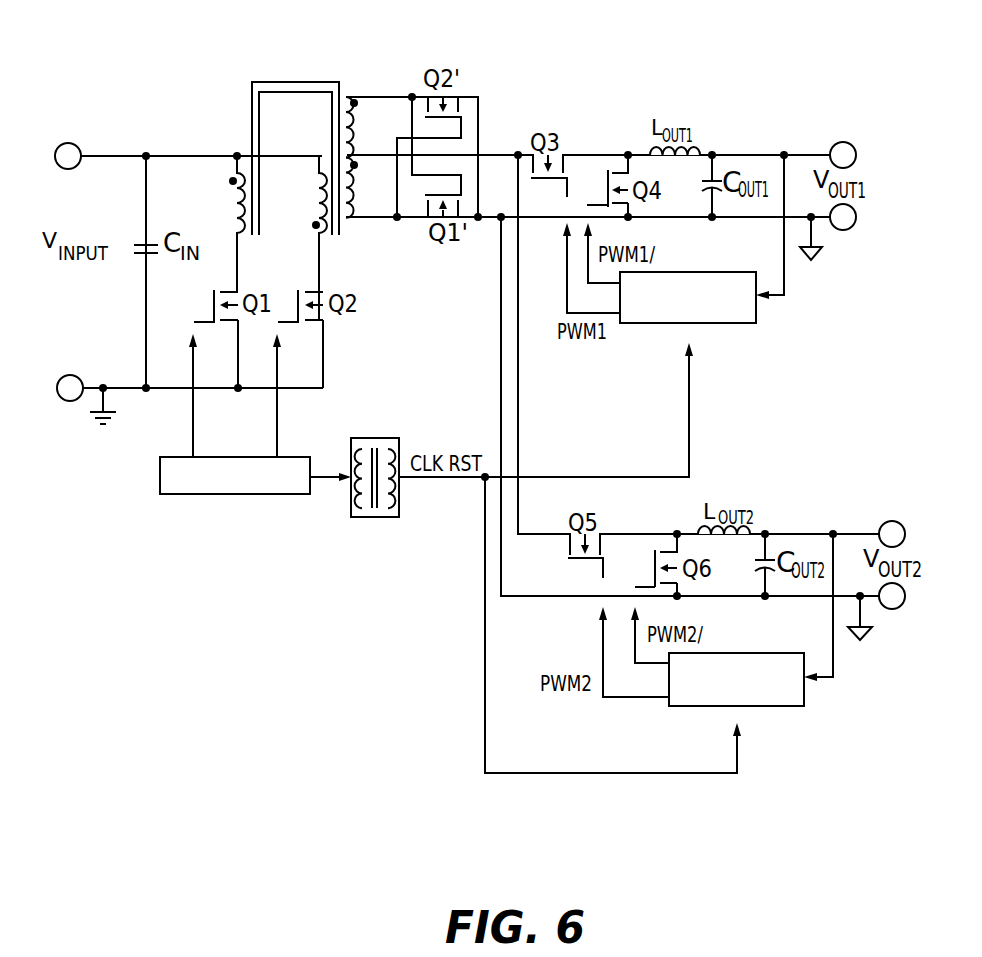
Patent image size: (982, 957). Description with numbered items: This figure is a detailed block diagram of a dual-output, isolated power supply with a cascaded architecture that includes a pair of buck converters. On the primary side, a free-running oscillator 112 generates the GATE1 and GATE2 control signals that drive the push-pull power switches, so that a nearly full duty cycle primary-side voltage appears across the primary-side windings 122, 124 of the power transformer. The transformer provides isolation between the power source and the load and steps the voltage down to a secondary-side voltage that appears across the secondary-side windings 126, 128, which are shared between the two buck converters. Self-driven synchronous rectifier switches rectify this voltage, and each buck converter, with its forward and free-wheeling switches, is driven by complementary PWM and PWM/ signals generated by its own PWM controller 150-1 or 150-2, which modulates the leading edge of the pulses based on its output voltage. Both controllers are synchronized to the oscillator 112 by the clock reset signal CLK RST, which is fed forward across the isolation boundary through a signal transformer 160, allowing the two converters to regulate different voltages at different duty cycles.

The free-running oscillator 112 is at (160, 477).
The primary-side winding 122 is at (236, 201).
The primary-side winding 124 is at (314, 205).
The secondary-side winding 126 is at (355, 188).
The secondary-side winding 128 is at (355, 125).
The signal transformer 160 is at (362, 438).
The PWM controller 150-1 is at (716, 323).
The PWM controller 150-2 is at (763, 706).